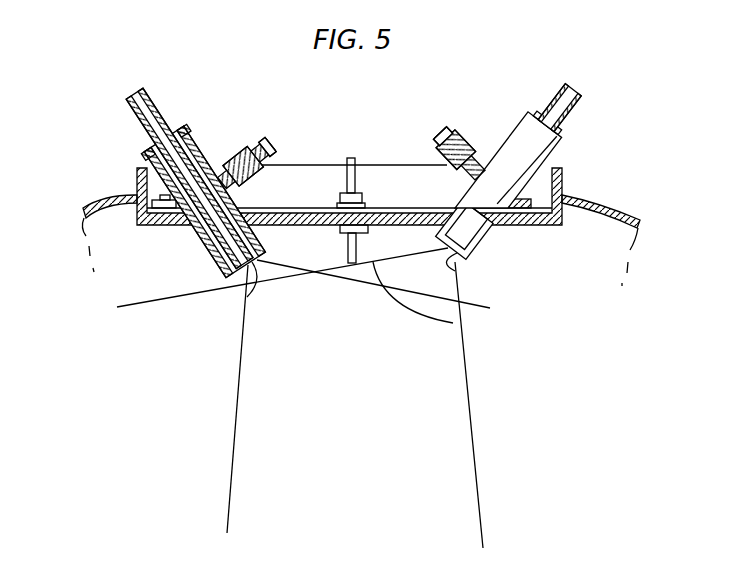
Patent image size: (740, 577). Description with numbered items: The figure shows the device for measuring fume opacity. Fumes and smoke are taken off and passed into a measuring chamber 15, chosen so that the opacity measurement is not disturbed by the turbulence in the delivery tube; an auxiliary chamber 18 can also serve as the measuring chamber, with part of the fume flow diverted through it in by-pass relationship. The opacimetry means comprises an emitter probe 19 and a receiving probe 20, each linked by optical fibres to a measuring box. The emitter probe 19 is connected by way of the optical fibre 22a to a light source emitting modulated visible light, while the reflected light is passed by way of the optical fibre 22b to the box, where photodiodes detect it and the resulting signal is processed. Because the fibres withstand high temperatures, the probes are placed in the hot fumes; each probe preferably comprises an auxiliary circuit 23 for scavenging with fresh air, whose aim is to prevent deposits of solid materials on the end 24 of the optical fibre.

The measuring chamber 15 is at (463, 342).
The auxiliary chamber 18 is at (382, 212).
The emitter probe 19 is at (525, 142).
The receiving probe 20 is at (188, 140).
The optical fibre 22a is at (578, 108).
The optical fibre 22b is at (136, 121).
The auxiliary circuit 23 is at (313, 108).
The end of the optical fibre 24 is at (237, 297).